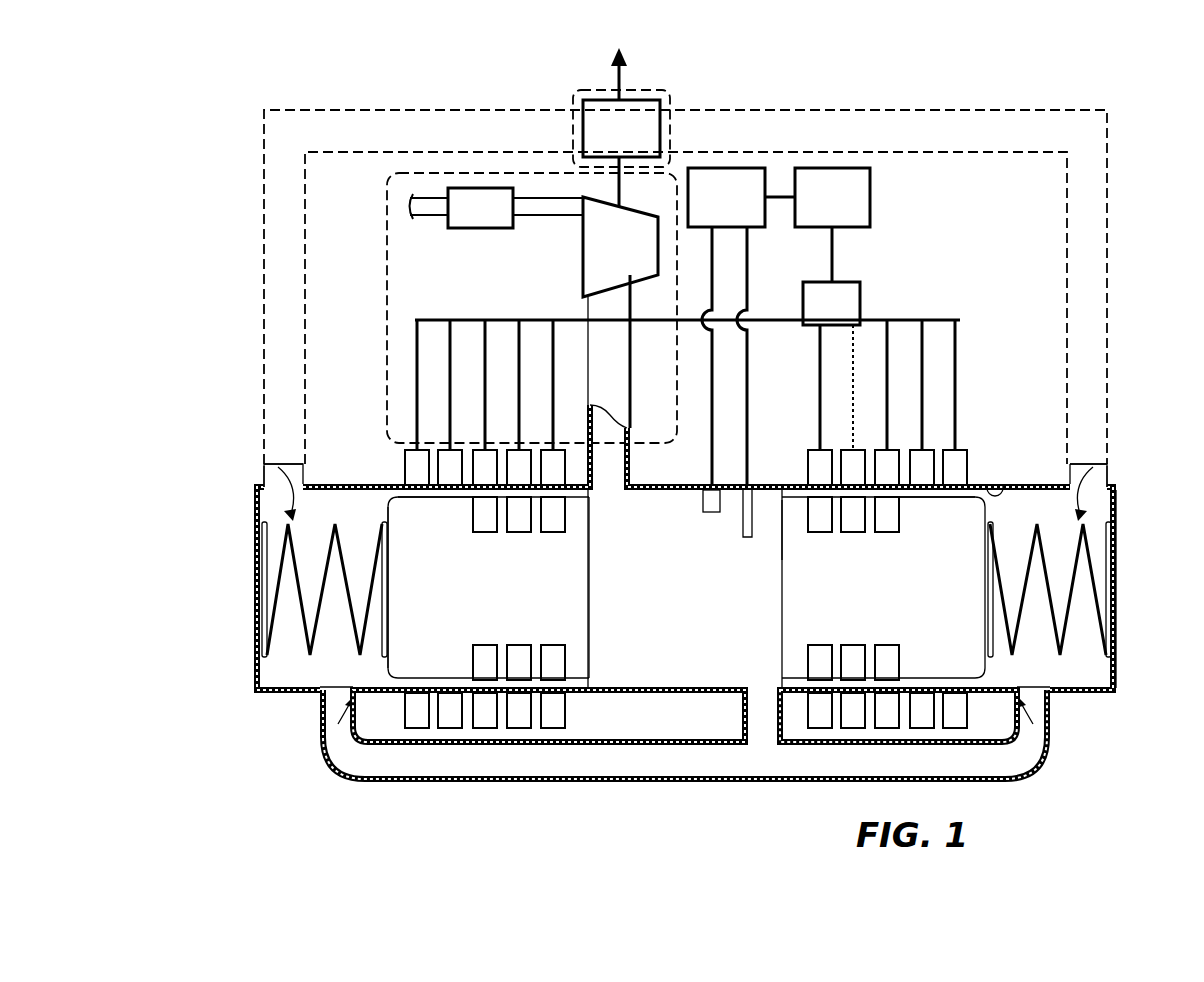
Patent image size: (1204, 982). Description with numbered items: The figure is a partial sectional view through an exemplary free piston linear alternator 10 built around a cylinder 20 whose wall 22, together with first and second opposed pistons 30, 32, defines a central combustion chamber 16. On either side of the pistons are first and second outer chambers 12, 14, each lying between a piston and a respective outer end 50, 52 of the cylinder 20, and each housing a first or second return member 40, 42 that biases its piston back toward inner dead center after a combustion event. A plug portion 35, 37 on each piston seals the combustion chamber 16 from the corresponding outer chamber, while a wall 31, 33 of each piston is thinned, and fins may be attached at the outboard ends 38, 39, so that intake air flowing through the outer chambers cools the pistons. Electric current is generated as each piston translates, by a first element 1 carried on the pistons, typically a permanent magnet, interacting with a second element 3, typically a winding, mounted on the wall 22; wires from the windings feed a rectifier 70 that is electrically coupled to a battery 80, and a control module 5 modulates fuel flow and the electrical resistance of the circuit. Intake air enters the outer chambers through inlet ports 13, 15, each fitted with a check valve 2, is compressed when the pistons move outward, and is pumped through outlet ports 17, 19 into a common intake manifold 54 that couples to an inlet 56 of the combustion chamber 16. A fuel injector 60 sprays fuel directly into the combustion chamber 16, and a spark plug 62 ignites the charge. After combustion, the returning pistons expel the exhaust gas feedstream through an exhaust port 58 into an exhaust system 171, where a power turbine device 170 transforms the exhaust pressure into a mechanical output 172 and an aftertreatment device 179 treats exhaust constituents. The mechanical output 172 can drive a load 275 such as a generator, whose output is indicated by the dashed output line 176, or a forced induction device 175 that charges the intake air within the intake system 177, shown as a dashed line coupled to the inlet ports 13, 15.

The first element 1 is at (893, 674).
The check valve 2 is at (280, 475).
The second element 3 is at (961, 722).
The control module 5 is at (719, 210).
The free piston linear alternator 10 is at (281, 242).
The first outer chamber 12 is at (265, 507).
The inlet port 13 is at (262, 475).
The second outer chamber 14 is at (1108, 505).
The inlet port 15 is at (1108, 470).
The combustion chamber 16 is at (675, 612).
The outlet port 17 is at (312, 693).
The outlet port 19 is at (1062, 693).
The cylinder 20 is at (327, 487).
The wall 22 is at (1005, 488).
The first piston 30 is at (474, 600).
The wall 31 is at (412, 500).
The second piston 32 is at (869, 600).
The wall 33 is at (962, 500).
The plug portion 35 is at (592, 660).
The plug portion 37 is at (783, 525).
The outboard end 38 is at (388, 515).
The outboard end 39 is at (993, 510).
The first return member 40 is at (300, 598).
The second return member 42 is at (1072, 590).
The outer end 50 is at (256, 552).
The outer end 52 is at (1118, 552).
The common intake manifold 54 is at (662, 775).
The inlet 56 is at (727, 688).
The exhaust port 58 is at (617, 457).
The fuel injector 60 is at (749, 540).
The spark plug 62 is at (703, 503).
The rectifier 70 is at (819, 316).
The battery 80 is at (845, 210).
The power turbine device 170 is at (636, 256).
The exhaust system 171 is at (387, 297).
The mechanical output 172 is at (612, 190).
The forced induction device 175 is at (638, 140).
The dashed output line 176 is at (624, 80).
The intake system 177 is at (415, 110).
The aftertreatment device 179 is at (497, 220).
The load 275 is at (672, 100).